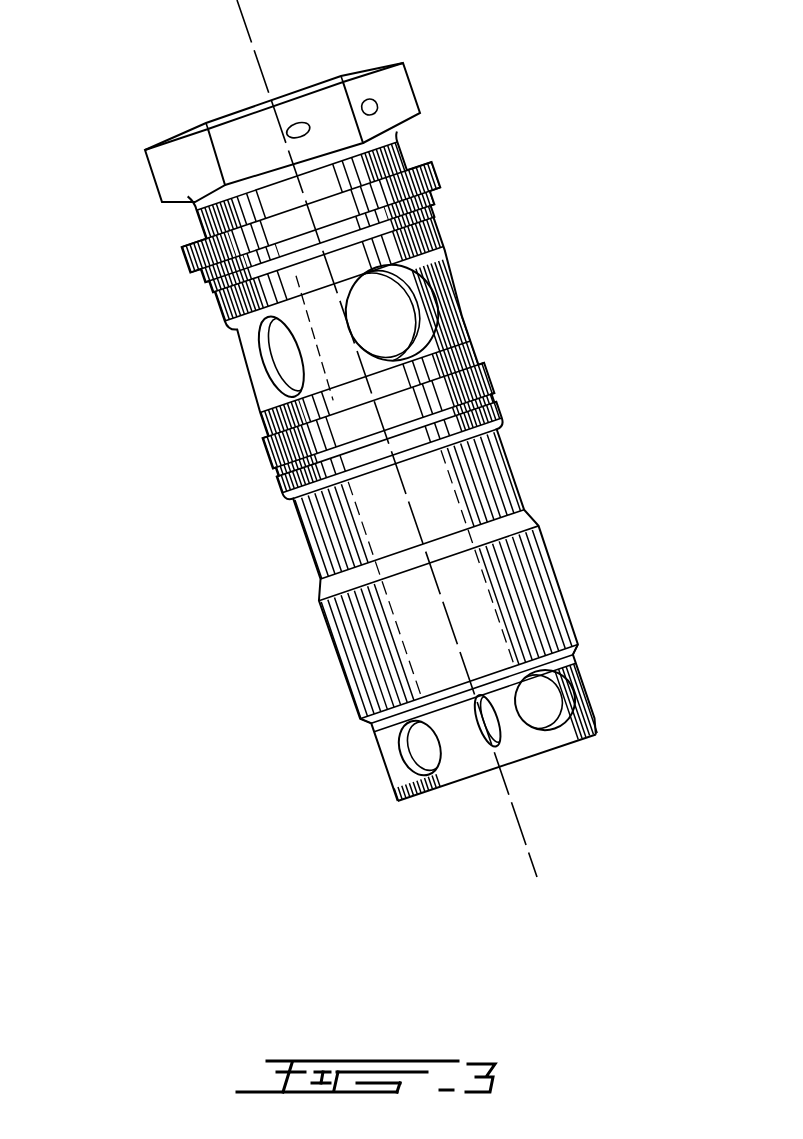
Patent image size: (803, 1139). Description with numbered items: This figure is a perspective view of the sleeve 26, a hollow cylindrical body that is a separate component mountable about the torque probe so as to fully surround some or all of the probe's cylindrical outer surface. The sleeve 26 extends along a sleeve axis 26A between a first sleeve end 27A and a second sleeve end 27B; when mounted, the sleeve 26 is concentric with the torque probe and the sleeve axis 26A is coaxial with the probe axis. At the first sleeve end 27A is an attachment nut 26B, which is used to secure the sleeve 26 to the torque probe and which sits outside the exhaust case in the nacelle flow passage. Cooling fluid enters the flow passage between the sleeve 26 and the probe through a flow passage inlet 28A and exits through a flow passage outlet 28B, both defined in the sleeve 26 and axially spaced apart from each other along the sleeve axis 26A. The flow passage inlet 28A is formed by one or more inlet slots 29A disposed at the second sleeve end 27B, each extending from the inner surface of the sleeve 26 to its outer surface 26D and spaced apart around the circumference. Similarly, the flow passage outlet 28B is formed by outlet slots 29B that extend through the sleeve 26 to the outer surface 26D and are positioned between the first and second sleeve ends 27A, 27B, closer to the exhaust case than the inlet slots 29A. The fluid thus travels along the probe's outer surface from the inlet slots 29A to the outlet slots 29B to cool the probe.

The sleeve 26 is at (233, 365).
The sleeve axis 26A is at (513, 808).
The attachment nut 26B is at (168, 171).
The outer surface 26D is at (450, 487).
The first sleeve end 27A is at (198, 160).
The second sleeve end 27B is at (478, 799).
The flow passage inlet 28A is at (363, 767).
The flow passage outlet 28B is at (430, 143).
The inlet slots 29A is at (417, 748).
The outlet slots 29B is at (283, 358).